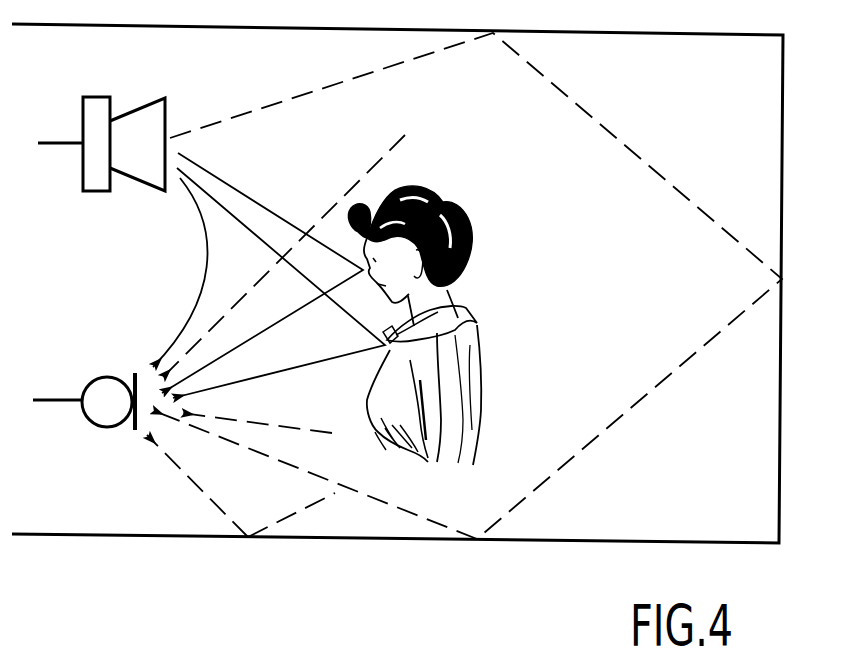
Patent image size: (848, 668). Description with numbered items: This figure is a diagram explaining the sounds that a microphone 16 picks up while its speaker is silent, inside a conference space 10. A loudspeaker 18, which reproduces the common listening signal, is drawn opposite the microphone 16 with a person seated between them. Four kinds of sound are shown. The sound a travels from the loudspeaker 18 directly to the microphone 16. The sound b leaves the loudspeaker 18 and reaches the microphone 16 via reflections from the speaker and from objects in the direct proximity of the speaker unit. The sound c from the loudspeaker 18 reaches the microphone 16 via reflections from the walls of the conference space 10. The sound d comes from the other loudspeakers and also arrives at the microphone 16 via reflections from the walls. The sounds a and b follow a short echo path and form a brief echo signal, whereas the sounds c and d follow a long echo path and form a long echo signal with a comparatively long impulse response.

The conference space 10 is at (783, 135).
The microphone 16 is at (89, 384).
The loudspeaker 18 is at (83, 110).
The sound a is at (186, 288).
The sound b is at (298, 308).
The sound c is at (745, 298).
The sound d is at (244, 288).